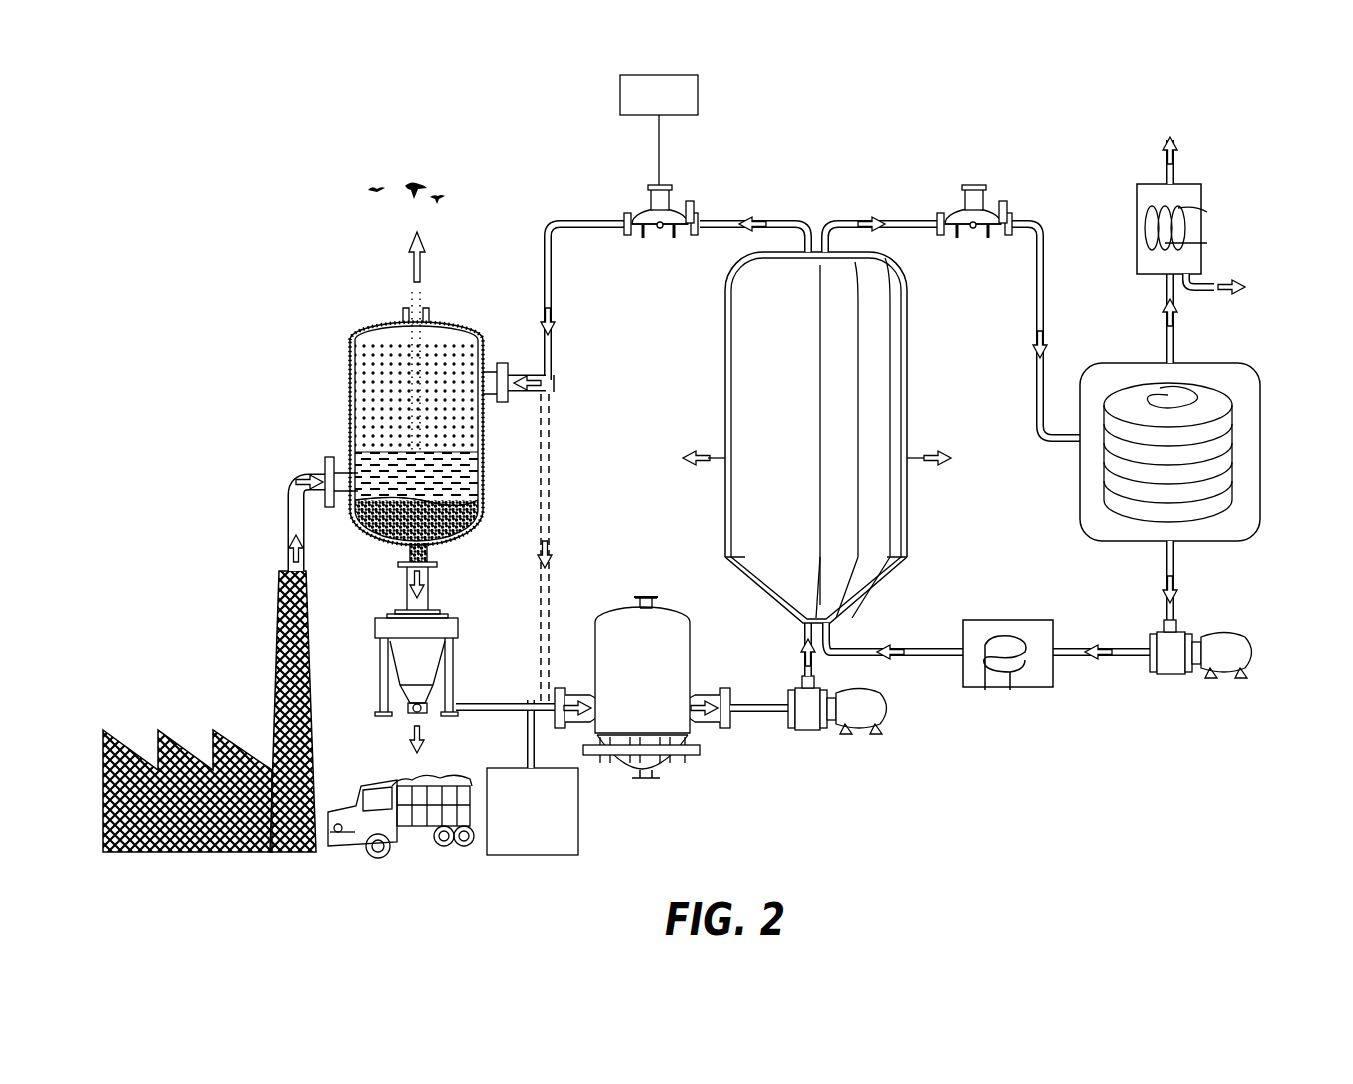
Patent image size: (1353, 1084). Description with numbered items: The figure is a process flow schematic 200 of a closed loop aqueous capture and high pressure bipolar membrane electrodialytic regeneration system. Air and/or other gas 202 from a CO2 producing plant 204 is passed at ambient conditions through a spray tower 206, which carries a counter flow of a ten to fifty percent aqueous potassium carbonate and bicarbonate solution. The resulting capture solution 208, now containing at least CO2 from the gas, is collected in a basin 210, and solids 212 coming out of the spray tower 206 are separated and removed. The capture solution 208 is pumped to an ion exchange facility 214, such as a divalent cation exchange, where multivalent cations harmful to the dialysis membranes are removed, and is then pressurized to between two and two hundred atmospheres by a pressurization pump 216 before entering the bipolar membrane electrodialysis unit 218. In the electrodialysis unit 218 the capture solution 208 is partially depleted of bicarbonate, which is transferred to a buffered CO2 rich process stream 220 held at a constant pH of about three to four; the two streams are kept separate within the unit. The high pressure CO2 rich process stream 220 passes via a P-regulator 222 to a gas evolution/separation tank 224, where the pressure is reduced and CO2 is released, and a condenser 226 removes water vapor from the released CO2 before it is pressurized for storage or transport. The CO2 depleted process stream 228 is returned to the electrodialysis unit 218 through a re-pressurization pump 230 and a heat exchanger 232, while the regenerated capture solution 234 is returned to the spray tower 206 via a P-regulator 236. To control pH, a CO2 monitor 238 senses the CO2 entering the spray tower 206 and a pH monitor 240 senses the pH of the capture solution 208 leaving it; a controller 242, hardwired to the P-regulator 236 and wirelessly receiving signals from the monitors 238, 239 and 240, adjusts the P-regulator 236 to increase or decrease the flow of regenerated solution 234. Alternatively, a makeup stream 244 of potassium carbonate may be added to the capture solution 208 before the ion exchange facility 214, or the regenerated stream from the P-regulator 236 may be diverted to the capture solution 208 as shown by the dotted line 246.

The process flow schematic 200 is at (280, 122).
The air and/or other gas 202 is at (289, 520).
The CO2 producing plant 204 is at (276, 662).
The spray tower 206 is at (453, 373).
The capture solution 208 is at (476, 492).
The basin 210 is at (364, 540).
The solids 212 is at (372, 804).
The ion exchange facility 214 is at (690, 660).
The pressurization pump 216 is at (886, 718).
The bipolar membrane electrodialysis unit 218 is at (910, 335).
The CO2 rich process stream 220 is at (852, 220).
The P-regulator 222 is at (960, 213).
The gas evolution/separation tank 224 is at (1142, 368).
The condenser 226 is at (1142, 188).
The CO2 depleted process stream 228 is at (1165, 580).
The re-pressurization pump 230 is at (1232, 634).
The heat exchanger 232 is at (1008, 620).
The regenerated flue gas capture solution 234 is at (770, 220).
The P-regulator 236 is at (648, 210).
The CO2 monitor 238 is at (318, 458).
The monitor 239 is at (440, 567).
The pH monitor 240 is at (527, 400).
The controller 242 is at (659, 95).
The makeup stream 244 is at (578, 812).
The dotted line 246 is at (552, 496).